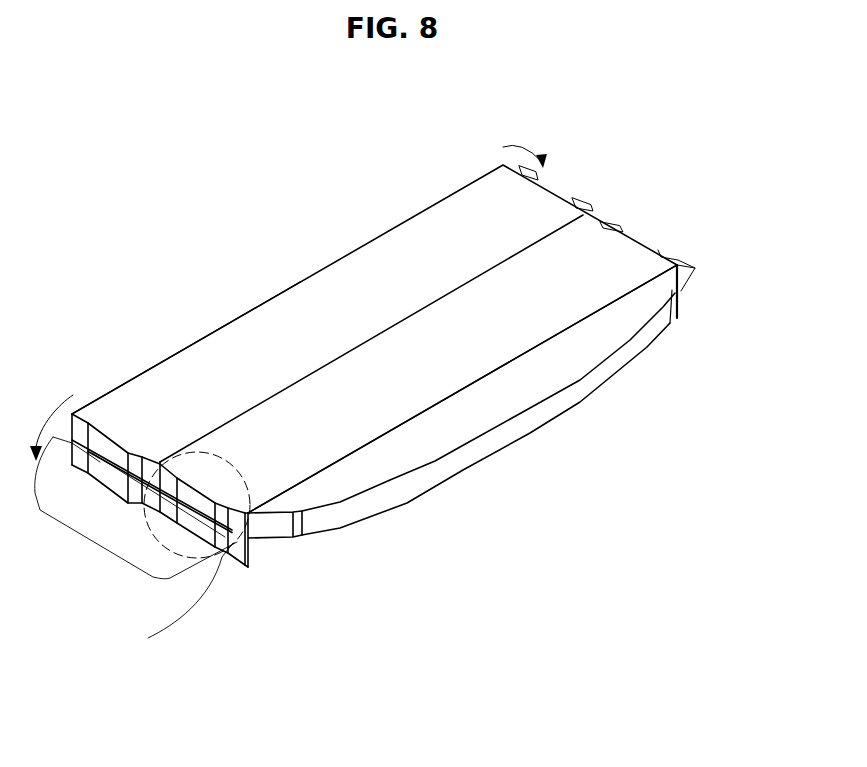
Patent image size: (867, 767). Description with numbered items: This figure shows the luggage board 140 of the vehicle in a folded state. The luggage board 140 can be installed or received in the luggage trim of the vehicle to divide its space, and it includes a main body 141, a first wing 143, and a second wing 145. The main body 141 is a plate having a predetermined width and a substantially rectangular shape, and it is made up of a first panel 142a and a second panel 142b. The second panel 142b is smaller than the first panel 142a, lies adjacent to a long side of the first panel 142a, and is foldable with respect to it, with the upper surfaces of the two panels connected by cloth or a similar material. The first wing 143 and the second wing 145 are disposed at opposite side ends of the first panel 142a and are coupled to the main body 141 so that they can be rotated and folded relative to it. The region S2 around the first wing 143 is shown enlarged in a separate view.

The luggage board 140 is at (396, 375).
The main body 141 is at (167, 228).
The first panel 142a is at (193, 375).
The second panel 142b is at (417, 443).
The first wing 143 is at (157, 563).
The second wing 145 is at (690, 267).
The region S2 is at (200, 457).